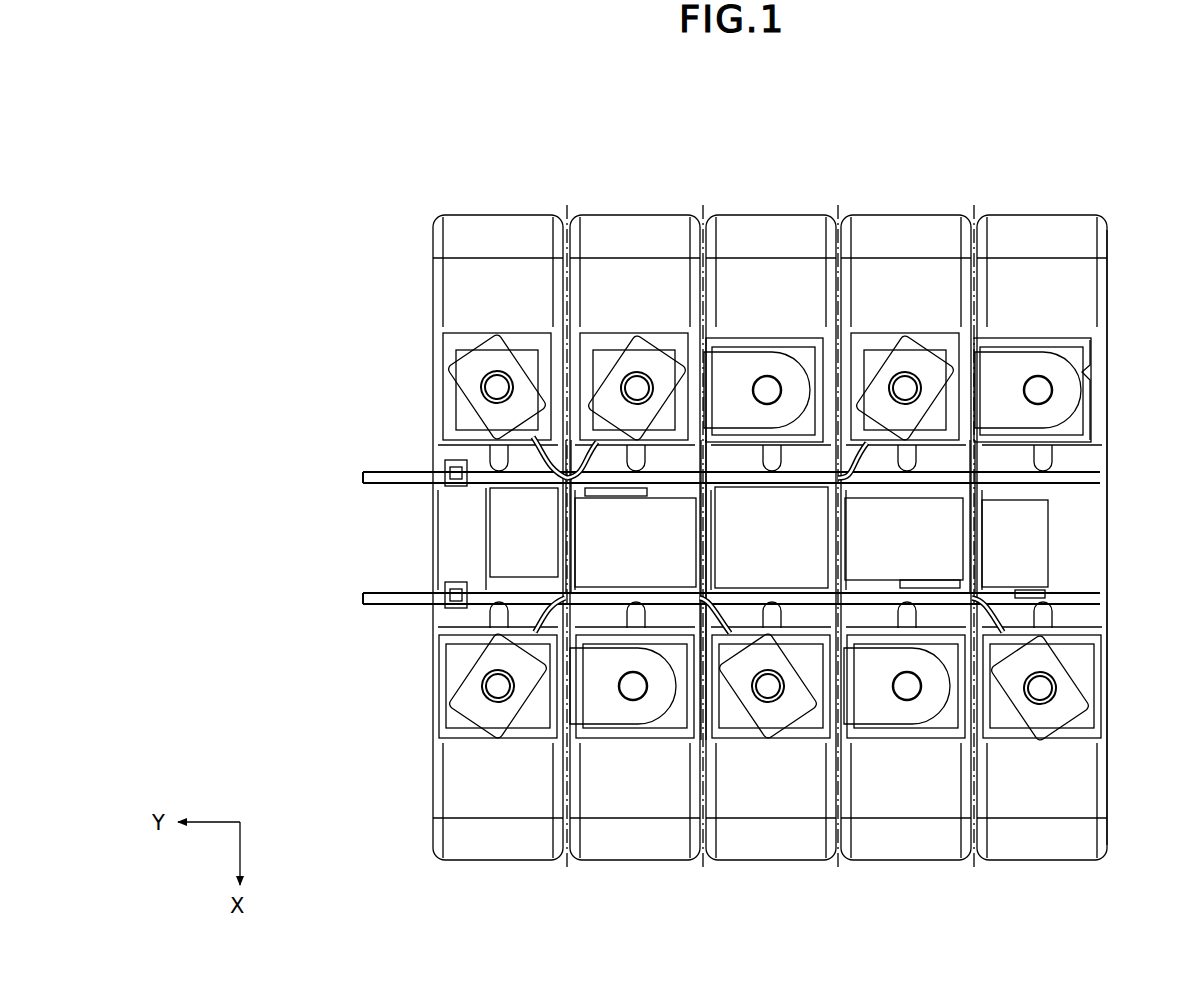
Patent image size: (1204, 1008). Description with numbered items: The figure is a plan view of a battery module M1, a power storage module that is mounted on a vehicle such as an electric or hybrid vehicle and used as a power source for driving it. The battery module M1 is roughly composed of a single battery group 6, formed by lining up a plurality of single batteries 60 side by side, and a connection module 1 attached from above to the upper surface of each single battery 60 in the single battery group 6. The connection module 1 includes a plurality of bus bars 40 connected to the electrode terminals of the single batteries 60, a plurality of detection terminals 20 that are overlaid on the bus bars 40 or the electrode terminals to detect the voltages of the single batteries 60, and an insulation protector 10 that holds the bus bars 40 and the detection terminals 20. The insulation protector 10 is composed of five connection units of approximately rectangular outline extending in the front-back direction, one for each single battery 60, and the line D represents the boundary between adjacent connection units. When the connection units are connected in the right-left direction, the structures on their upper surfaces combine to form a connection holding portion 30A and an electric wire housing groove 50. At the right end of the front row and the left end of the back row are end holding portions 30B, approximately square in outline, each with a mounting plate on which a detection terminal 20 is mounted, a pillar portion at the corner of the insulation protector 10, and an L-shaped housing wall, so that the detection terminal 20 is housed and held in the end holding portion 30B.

The connection module 1 is at (1100, 600).
The single battery group 6 is at (1108, 243).
The insulation protector 10 is at (1088, 372).
The detection terminal 20 is at (632, 352).
The connection holding portion 30A is at (757, 343).
The end holding portion 30B is at (525, 342).
The bus bar 40 is at (765, 342).
The electric wire housing groove 50 is at (1062, 455).
The single battery 60 is at (882, 235).
The battery module M1 is at (415, 176).
The boundary line between connection units D is at (768, 544).